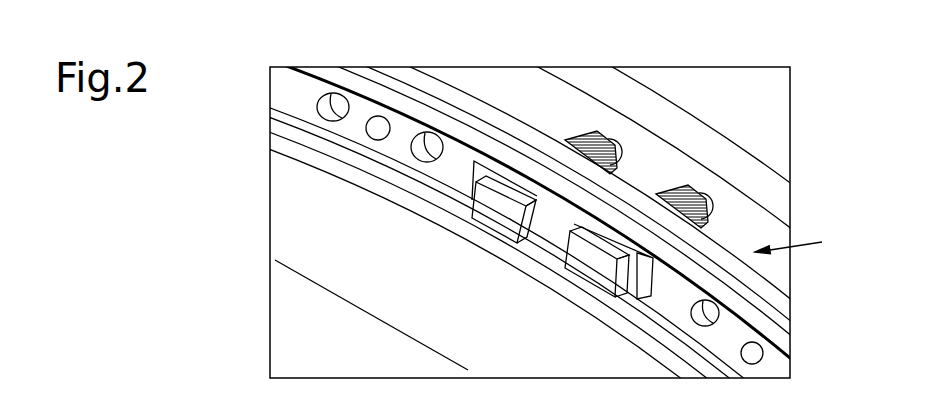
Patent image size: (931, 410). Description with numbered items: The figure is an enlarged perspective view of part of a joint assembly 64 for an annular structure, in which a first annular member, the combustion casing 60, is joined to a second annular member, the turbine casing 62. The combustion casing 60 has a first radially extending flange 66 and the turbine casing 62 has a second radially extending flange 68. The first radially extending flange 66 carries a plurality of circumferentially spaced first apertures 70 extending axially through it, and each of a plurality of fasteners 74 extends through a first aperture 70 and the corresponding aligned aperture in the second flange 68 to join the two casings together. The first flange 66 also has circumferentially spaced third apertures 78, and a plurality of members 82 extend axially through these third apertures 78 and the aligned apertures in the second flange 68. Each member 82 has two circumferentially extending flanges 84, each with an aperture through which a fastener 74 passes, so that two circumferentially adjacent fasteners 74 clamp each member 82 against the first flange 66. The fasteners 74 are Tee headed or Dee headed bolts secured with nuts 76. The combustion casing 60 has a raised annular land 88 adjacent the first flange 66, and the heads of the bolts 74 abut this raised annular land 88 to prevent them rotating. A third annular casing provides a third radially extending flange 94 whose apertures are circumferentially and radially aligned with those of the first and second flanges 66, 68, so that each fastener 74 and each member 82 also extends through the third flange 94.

The combustion casing 60 is at (293, 197).
The turbine casing 62 is at (728, 160).
The joint assembly 64 is at (802, 242).
The first radially extending flange 66 is at (290, 86).
The second radially extending flange 68 is at (780, 300).
The first apertures 70 is at (335, 100).
The fasteners 74 is at (585, 265).
The nuts 76 is at (617, 142).
The third apertures 78 is at (380, 122).
The members 82 is at (577, 212).
The circumferentially extending flanges 84 is at (503, 170).
The raised annular land 88 is at (288, 132).
The third radially extending flange 94 is at (553, 163).